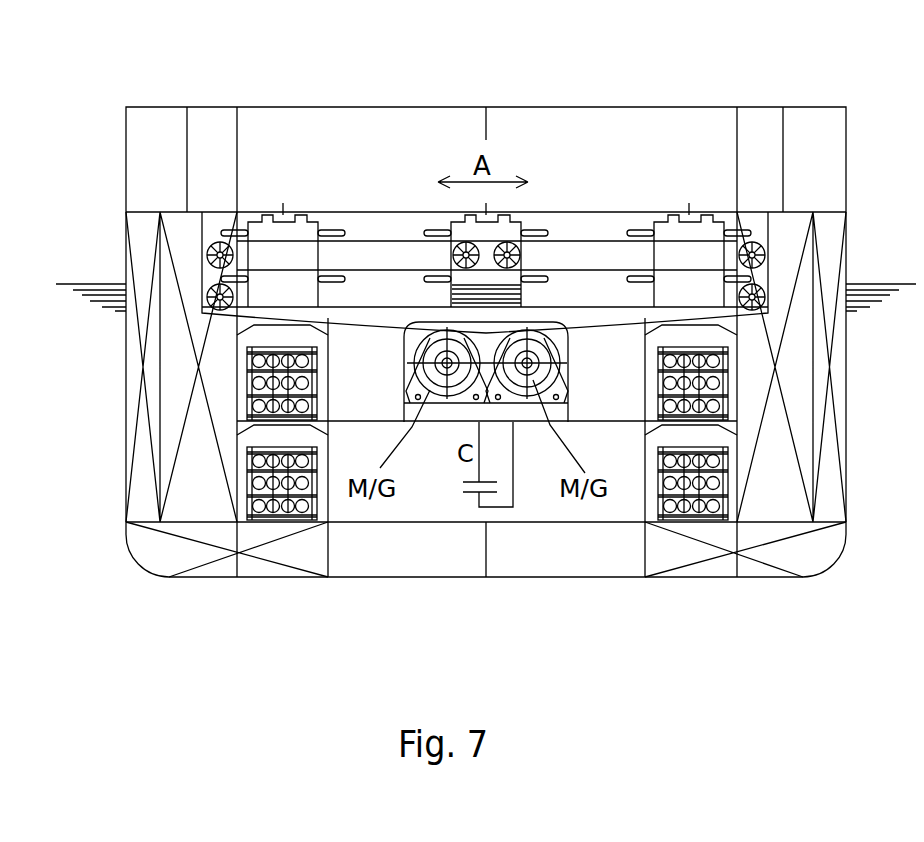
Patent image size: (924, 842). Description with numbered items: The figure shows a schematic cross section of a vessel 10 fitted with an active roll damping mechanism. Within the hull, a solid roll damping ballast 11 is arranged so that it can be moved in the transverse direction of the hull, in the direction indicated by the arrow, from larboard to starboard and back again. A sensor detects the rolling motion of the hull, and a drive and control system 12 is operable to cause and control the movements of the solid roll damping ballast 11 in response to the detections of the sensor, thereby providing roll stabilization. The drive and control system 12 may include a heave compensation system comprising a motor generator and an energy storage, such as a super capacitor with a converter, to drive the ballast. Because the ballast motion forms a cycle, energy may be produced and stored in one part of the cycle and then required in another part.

The vessel 10 is at (552, 560).
The solid roll damping ballast 11 is at (493, 237).
The drive and control system 12 is at (543, 350).